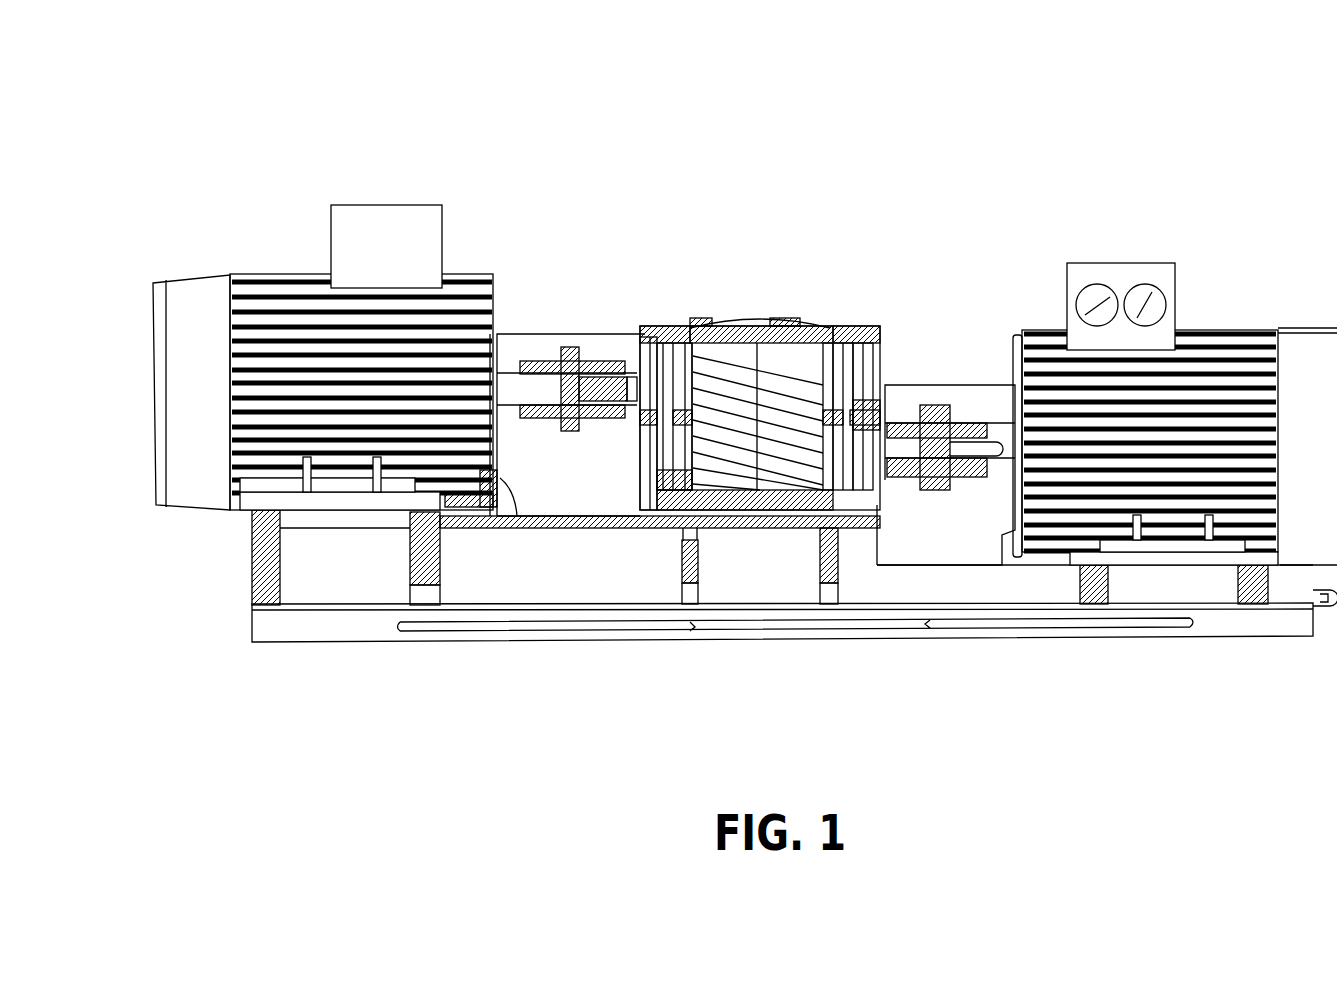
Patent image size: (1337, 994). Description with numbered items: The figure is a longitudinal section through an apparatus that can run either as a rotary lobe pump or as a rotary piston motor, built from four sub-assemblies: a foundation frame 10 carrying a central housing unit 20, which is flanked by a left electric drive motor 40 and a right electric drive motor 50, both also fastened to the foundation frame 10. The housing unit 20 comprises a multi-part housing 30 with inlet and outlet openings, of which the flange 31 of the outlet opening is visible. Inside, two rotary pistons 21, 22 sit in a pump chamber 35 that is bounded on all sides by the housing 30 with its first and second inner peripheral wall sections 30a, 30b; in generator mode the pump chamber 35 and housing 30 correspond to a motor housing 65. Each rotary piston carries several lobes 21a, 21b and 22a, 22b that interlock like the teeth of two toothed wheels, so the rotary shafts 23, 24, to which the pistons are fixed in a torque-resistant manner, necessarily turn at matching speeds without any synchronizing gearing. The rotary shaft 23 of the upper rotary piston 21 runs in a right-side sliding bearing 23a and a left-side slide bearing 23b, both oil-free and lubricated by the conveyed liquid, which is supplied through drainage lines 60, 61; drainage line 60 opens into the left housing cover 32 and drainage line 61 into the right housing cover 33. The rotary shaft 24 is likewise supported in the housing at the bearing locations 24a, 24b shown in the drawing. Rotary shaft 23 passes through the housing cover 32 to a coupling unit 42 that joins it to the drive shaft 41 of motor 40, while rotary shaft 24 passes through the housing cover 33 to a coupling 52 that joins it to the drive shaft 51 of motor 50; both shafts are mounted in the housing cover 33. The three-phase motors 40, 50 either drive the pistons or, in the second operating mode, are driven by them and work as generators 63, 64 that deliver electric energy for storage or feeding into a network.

The foundation frame 10 is at (733, 628).
The housing unit 20 is at (816, 430).
The rotary piston 21 is at (740, 328).
The lobe 21a is at (793, 320).
The lobe 21b is at (867, 330).
The rotary piston 22 is at (770, 443).
The lobe 22a is at (717, 445).
The lobe 22b is at (843, 453).
The rotary shaft 23 is at (617, 390).
The right-side sliding bearing 23a is at (638, 340).
The left-side slide bearing 23b is at (870, 350).
The rotary shaft 24 is at (897, 450).
The first bearing 24a is at (685, 450).
The second bearing 24b is at (842, 440).
The housing 30 is at (697, 337).
The first inner peripheral wall section 30a is at (797, 462).
The second inner peripheral wall section 30b is at (787, 327).
The flange 31 is at (767, 323).
The housing cover 32 is at (630, 465).
The housing cover 33 is at (892, 462).
The pump chamber 35 is at (705, 337).
The electric drive motor 40 is at (394, 123).
The drive shaft 41 is at (527, 390).
The coupling unit 42 is at (556, 465).
The electric drive motor 50 is at (1222, 228).
The drive shaft 51 is at (993, 443).
The coupling 52 is at (965, 525).
The drainage line 60 is at (660, 500).
The drainage line 61 is at (883, 440).
The generator 63 is at (252, 182).
The generator 64 is at (1112, 216).
The motor housing 65 is at (697, 450).